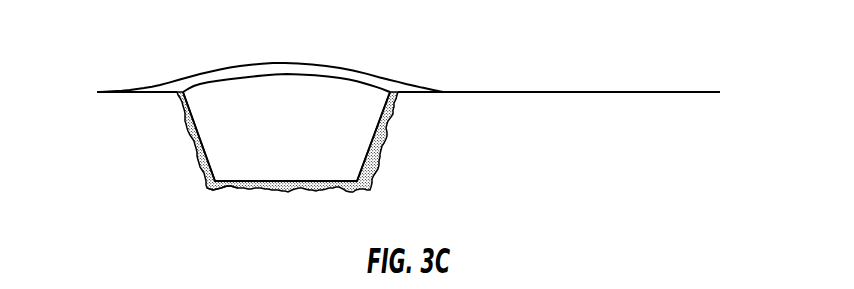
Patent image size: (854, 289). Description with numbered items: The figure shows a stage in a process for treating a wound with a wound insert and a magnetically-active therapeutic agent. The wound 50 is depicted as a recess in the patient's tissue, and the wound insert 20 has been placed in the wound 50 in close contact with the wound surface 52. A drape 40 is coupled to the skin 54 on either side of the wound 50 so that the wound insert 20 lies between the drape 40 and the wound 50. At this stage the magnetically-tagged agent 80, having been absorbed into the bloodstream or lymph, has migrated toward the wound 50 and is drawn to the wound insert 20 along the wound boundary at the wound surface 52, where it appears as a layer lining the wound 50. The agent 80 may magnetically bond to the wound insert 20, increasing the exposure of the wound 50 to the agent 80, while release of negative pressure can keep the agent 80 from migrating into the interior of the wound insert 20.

The wound insert 20 is at (300, 134).
The drape 40 is at (408, 84).
The wound 50 is at (138, 147).
The wound surface 52 is at (206, 178).
The skin 54 is at (538, 92).
The agent 80 is at (387, 138).